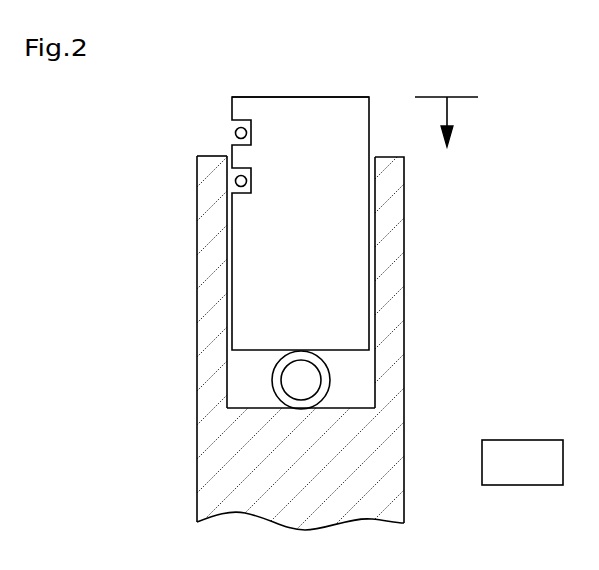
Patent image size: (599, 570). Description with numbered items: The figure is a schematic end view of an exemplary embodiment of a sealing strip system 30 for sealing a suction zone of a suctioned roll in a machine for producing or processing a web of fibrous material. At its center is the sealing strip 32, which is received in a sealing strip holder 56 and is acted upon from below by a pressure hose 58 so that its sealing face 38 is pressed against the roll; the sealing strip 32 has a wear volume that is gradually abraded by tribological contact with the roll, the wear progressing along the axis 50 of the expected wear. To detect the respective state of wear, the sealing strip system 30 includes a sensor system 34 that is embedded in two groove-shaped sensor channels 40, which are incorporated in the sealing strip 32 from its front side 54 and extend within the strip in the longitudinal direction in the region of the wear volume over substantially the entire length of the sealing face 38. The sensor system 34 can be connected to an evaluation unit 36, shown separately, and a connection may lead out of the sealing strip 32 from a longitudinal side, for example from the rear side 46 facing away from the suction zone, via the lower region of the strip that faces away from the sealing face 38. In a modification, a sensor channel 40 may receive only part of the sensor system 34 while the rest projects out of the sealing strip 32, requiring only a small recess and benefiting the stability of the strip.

The sealing strip system 30 is at (305, 82).
The sealing strip 32 is at (263, 228).
The sensor system 34 is at (252, 133).
The evaluation unit 36 is at (518, 452).
The sealing face 38 is at (352, 97).
The sensor channel 40 is at (233, 133).
The rear side 46 is at (369, 218).
The axis of the expected wear 50 is at (448, 113).
The front side 54 is at (232, 272).
The sealing strip holder 56 is at (390, 272).
The pressure hose 58 is at (301, 351).